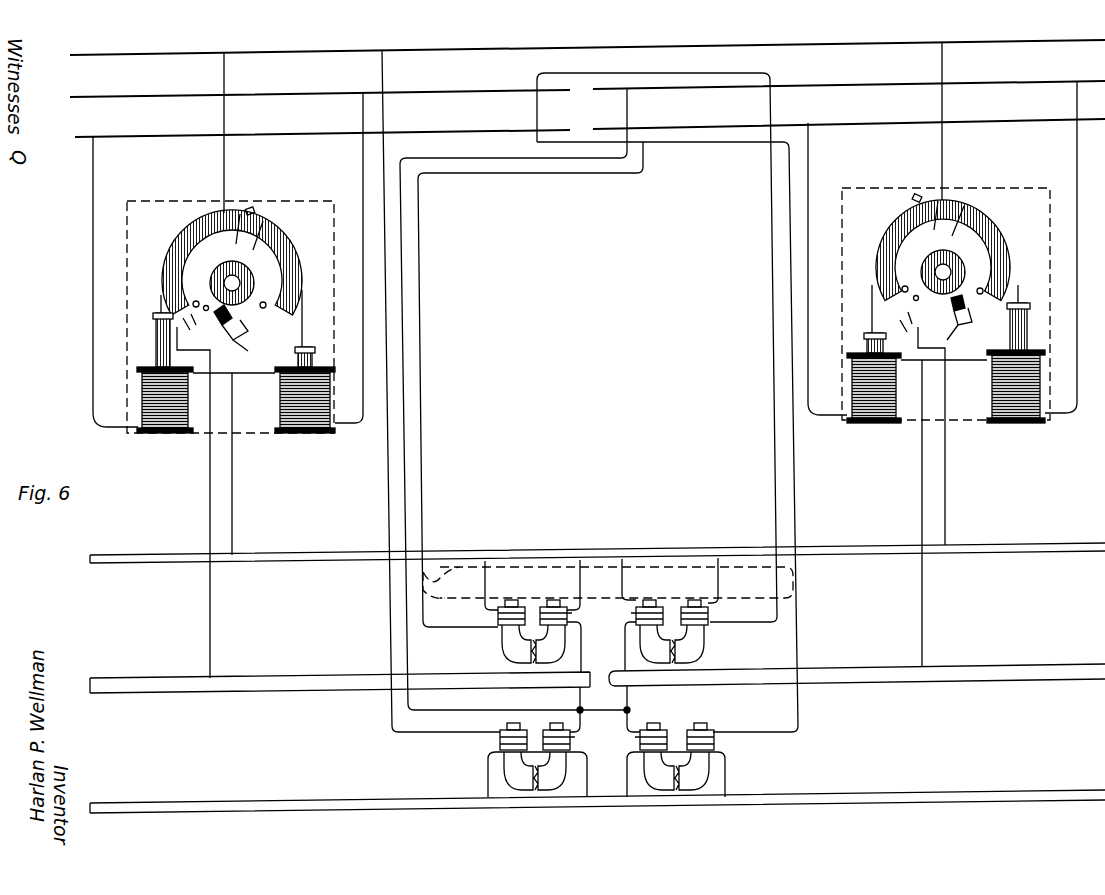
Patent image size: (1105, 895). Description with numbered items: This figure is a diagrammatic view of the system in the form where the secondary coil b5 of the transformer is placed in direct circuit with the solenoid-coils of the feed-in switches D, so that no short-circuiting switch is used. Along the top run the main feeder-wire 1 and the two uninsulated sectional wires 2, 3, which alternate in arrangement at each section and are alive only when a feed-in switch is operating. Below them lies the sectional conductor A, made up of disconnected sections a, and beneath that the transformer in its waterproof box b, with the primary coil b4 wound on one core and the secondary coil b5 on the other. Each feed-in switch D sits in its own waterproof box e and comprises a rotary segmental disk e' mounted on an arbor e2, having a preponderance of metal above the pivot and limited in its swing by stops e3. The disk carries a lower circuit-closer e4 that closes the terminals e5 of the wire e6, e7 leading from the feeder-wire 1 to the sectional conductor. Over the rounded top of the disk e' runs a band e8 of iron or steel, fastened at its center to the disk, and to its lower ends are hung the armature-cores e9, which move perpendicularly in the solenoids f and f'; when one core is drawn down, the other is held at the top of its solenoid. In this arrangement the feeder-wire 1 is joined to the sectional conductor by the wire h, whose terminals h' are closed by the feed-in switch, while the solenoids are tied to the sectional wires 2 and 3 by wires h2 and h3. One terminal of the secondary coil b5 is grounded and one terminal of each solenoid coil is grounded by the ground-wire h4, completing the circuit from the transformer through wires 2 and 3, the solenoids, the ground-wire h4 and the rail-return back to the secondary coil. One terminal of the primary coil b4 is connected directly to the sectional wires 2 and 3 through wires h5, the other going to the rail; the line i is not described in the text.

The main feeder-wire 1 is at (587, 42).
The sectional wire 2 is at (587, 85).
The sectional wire 3 is at (590, 125).
The waterproof box e is at (598, 306).
The rotary segmental disk e' is at (574, 257).
The arbor e2 is at (210, 283).
The stops e3 is at (603, 302).
The lower circuit-closer e4 is at (210, 340).
The terminals e5 is at (556, 302).
The wire e6 is at (200, 218).
The wire e7 is at (212, 462).
The band e8 is at (296, 312).
The armature-cores e9 is at (156, 330).
The solenoid f is at (562, 393).
The solenoid f' is at (659, 391).
The wire h is at (581, 611).
The terminals h' is at (558, 337).
The wire h2 is at (392, 316).
The wire h3 is at (830, 184).
The ground-wire h4 is at (611, 457).
The wires h5 is at (423, 514).
The feed-in switch D is at (604, 317).
The wire i is at (105, 282).
The sectional conductor A is at (857, 661).
The section a is at (597, 742).
The waterproof box b is at (645, 642).
The primary coil b4 is at (508, 627).
The secondary coil b5 is at (603, 682).